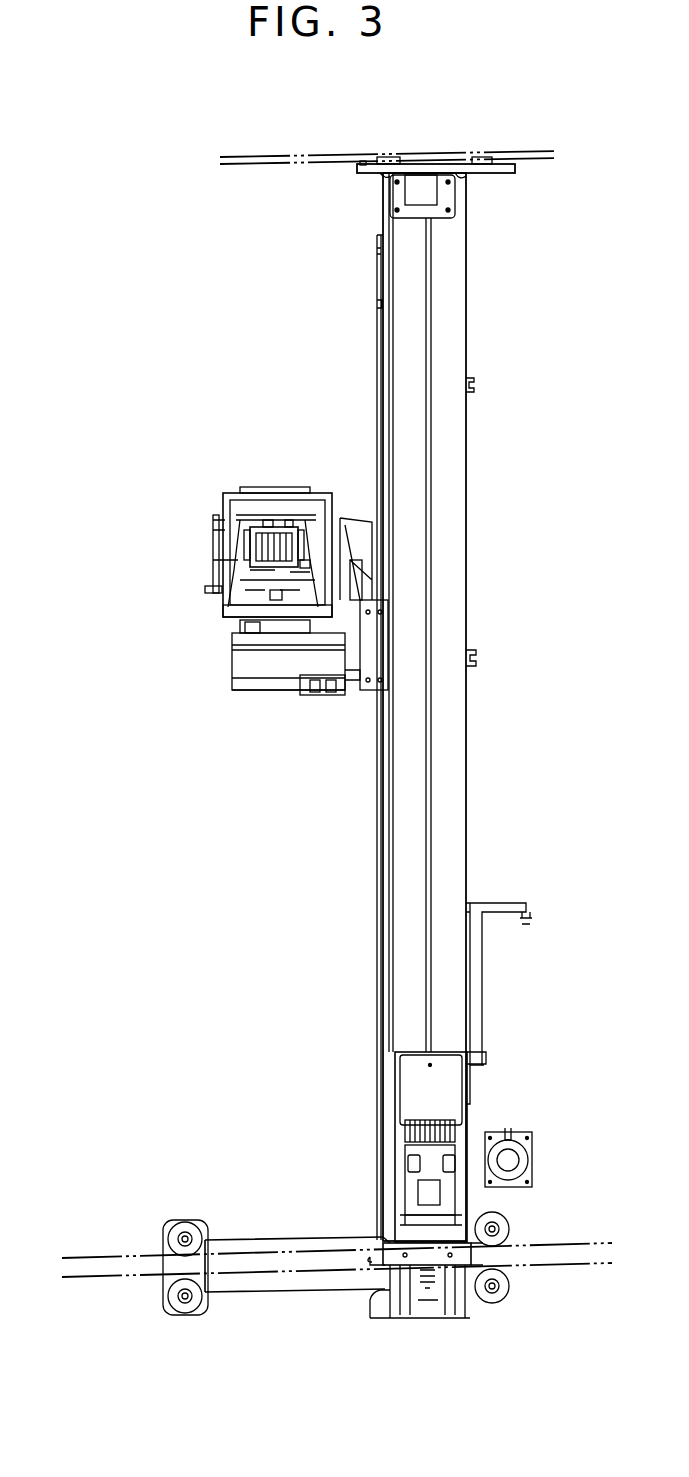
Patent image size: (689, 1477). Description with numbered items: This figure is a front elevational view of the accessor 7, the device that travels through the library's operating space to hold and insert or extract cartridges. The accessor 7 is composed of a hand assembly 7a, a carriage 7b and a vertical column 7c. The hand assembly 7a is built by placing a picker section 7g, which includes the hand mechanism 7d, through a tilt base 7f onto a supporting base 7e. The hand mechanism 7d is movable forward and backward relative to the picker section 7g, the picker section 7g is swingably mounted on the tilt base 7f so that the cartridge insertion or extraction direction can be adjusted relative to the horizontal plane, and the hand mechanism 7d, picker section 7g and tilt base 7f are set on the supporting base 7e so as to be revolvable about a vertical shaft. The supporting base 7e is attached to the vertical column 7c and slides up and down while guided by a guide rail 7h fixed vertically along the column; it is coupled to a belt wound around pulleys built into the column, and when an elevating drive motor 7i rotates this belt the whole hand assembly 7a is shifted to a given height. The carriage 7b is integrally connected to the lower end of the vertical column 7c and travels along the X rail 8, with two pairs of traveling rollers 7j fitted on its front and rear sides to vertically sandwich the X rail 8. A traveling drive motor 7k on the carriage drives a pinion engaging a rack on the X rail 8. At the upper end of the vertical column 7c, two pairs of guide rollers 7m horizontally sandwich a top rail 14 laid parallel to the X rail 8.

The accessor 7 is at (355, 717).
The hand assembly 7a is at (228, 665).
The carriage 7b is at (325, 1238).
The vertical column 7c is at (462, 790).
The hand mechanism 7d is at (284, 516).
The supporting base 7e is at (346, 632).
The tilt base 7f is at (223, 612).
The picker section 7g is at (238, 560).
The guide rail 7h is at (384, 808).
The elevating drive motor 7i is at (510, 1158).
The traveling rollers 7j is at (200, 1290).
The traveling drive motor 7k is at (410, 1150).
The guide rollers 7m is at (393, 160).
The X rail 8 is at (89, 1256).
The top rail 14 is at (246, 166).